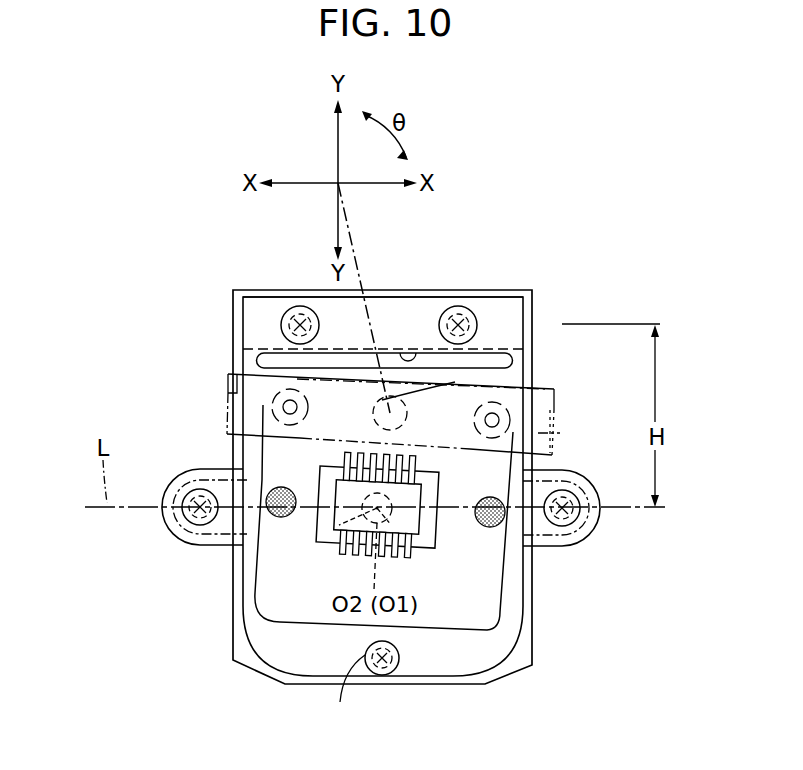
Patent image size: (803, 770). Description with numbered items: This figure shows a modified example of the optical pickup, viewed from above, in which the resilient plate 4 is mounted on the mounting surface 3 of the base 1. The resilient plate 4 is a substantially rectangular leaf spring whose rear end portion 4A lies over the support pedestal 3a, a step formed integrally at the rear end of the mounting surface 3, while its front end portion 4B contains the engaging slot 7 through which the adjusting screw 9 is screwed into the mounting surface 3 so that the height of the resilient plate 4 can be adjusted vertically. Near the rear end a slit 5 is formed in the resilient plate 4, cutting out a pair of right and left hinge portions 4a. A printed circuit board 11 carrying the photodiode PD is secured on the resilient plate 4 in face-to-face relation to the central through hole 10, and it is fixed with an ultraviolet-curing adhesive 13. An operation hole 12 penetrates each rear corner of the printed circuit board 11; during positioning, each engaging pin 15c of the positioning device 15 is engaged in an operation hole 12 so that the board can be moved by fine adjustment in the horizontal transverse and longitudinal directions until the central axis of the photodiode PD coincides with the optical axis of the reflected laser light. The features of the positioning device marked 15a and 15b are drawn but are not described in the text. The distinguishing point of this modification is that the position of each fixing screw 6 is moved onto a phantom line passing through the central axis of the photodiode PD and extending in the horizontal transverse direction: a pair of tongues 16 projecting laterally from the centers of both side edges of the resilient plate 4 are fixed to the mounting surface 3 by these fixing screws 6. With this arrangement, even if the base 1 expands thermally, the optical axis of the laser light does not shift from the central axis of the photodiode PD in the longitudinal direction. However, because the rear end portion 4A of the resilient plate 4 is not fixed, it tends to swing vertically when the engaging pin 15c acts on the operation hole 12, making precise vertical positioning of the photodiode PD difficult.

The base 1 is at (381, 483).
The mounting surface 3 is at (512, 666).
The support pedestal 3a is at (479, 297).
The resilient plate 4 is at (363, 487).
The rear end portion 4A is at (255, 306).
The front end portion 4B is at (440, 670).
The hinge portions 4a is at (252, 362).
The slit 5 is at (400, 352).
The fixing screw 6 is at (300, 306).
The engaging slot 7 is at (375, 675).
The adjusting screw 9 is at (342, 688).
The central through hole 10 is at (320, 538).
The printed circuit board 11 is at (260, 603).
The operation hole 12 is at (283, 403).
The ultraviolet-curing adhesive 13 is at (268, 490).
The positioning device 15 is at (392, 390).
The mounting plate edge portion 15a is at (545, 389).
The mounting plate side edge 15b is at (556, 408).
The engaging pin 15c is at (225, 409).
The tongues 16 is at (175, 537).
The photodiode PD is at (407, 523).